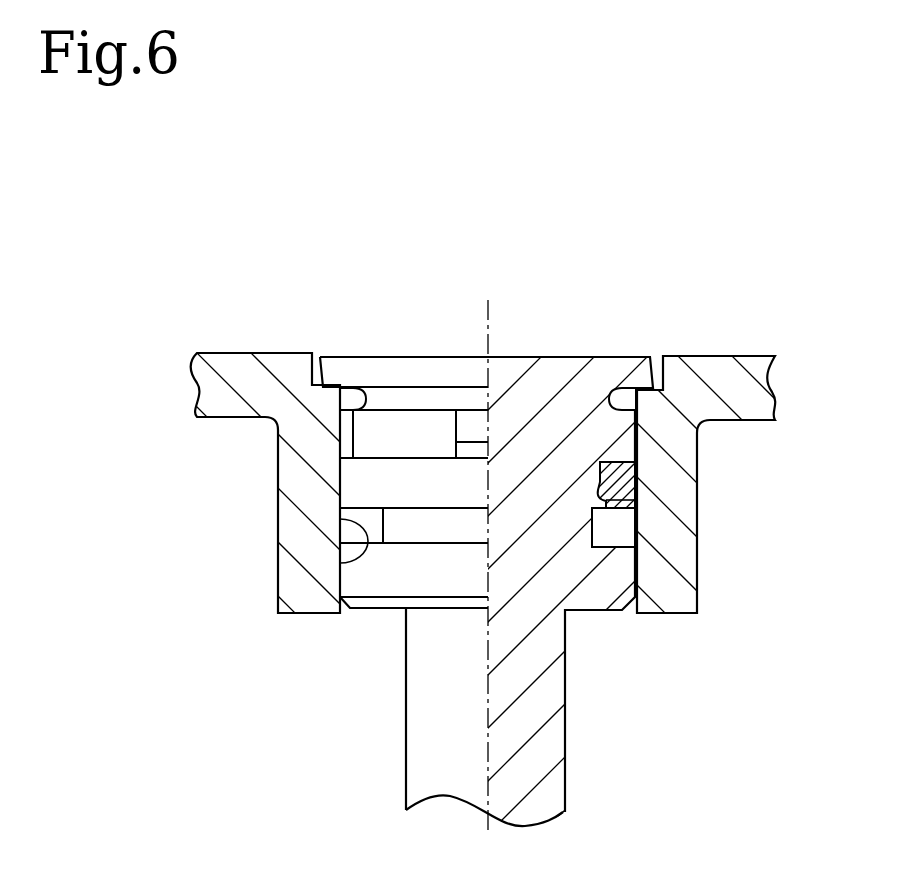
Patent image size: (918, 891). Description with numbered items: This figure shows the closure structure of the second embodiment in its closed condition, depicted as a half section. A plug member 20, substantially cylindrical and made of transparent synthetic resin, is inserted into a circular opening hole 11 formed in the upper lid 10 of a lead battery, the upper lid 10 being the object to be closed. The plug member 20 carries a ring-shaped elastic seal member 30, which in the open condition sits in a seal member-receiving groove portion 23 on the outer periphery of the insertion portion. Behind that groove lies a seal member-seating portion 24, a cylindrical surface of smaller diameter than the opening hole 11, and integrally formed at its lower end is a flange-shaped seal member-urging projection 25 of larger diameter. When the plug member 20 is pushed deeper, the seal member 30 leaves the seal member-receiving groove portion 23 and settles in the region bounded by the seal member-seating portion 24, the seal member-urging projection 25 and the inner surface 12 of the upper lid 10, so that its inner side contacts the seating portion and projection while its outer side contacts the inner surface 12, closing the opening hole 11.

The upper lid 10 is at (242, 352).
The opening hole 11 is at (625, 613).
The inner surface 12 is at (345, 556).
The plug member 20 is at (413, 712).
The seal member-receiving groove portion 23 is at (595, 530).
The seal member-seating portion 24 is at (600, 467).
The seal member-urging projection 25 is at (600, 502).
The seal member 30 is at (362, 477).